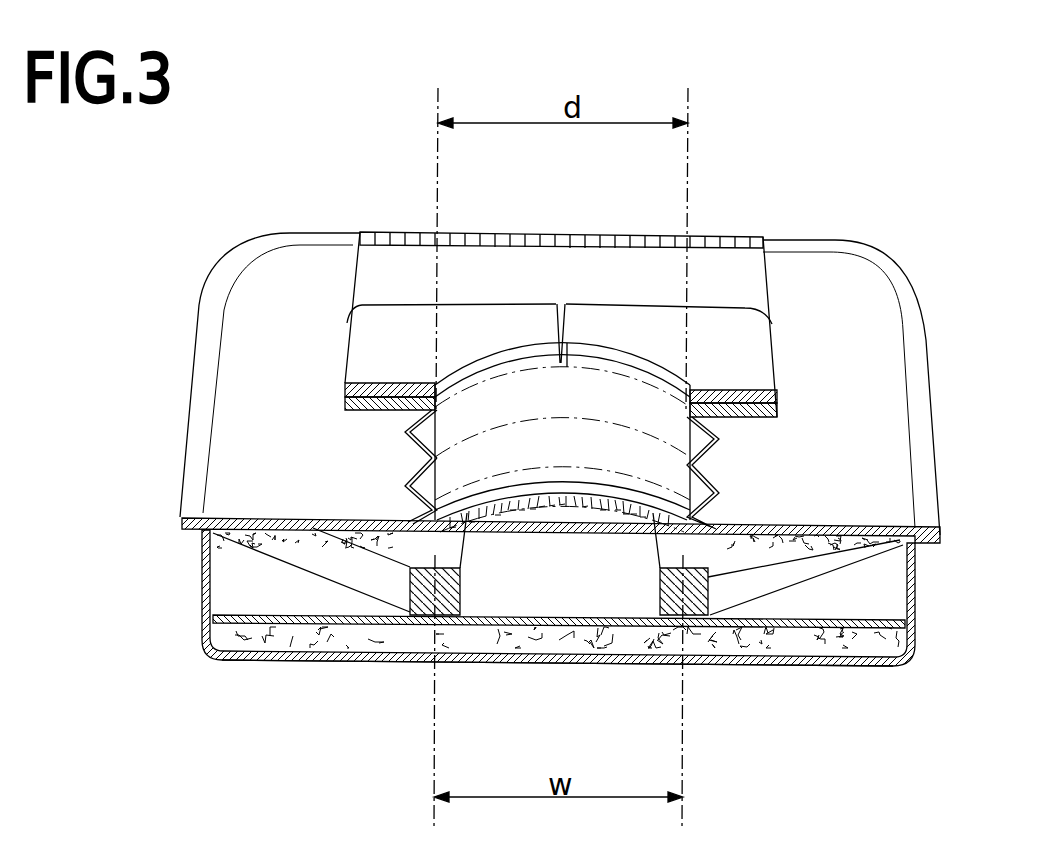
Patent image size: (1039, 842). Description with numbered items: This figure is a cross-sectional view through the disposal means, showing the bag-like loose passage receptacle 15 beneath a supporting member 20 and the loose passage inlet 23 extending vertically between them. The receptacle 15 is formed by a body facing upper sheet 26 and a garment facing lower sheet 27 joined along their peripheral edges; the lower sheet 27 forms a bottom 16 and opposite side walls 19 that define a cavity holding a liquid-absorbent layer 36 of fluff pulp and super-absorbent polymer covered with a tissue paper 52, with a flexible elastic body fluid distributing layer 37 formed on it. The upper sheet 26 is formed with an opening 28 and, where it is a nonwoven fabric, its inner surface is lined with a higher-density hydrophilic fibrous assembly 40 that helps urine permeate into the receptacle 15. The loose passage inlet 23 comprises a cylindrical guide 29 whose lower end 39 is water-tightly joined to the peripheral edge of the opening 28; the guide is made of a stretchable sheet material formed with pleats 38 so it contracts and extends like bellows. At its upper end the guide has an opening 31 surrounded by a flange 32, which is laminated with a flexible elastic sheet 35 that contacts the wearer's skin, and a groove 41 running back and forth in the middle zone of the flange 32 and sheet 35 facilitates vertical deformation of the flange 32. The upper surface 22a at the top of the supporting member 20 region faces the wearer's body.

The loose passage receptacle 15 is at (186, 560).
The bottom 16 is at (723, 663).
The side walls 19 is at (200, 597).
The supporting member 20 is at (769, 279).
The top contact surface 22a is at (398, 232).
The loose passage inlet 23 is at (600, 469).
The upper sheet 26 is at (918, 395).
The lower sheet 27 is at (856, 673).
The opening 28 is at (508, 487).
The cylindrical guide 29 is at (713, 460).
The opening 31 is at (600, 372).
The flange 32 is at (780, 405).
The flexible elastic sheet 35 is at (758, 352).
The liquid-absorbent layer 36 is at (320, 633).
The body fluid distributing layer 37 is at (653, 587).
The pleats 38 is at (410, 457).
The lower end 39 is at (410, 505).
The hydrophilic fibrous assembly 40 is at (843, 543).
The groove 41 is at (567, 345).
The tissue paper 52 is at (317, 617).